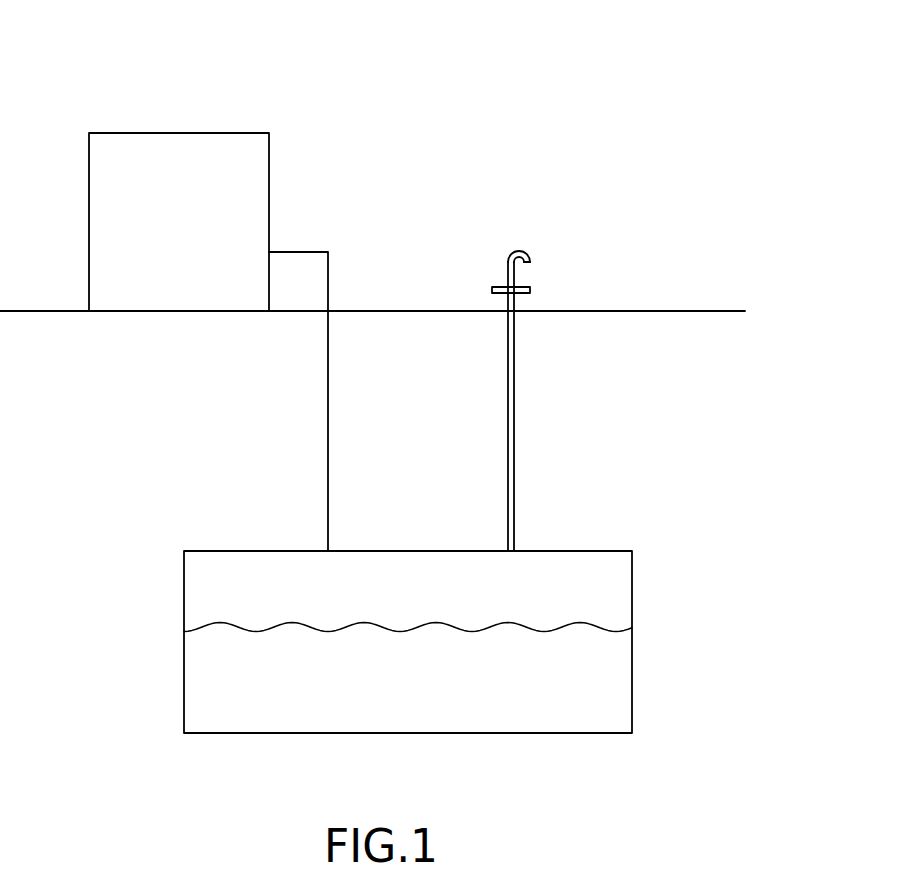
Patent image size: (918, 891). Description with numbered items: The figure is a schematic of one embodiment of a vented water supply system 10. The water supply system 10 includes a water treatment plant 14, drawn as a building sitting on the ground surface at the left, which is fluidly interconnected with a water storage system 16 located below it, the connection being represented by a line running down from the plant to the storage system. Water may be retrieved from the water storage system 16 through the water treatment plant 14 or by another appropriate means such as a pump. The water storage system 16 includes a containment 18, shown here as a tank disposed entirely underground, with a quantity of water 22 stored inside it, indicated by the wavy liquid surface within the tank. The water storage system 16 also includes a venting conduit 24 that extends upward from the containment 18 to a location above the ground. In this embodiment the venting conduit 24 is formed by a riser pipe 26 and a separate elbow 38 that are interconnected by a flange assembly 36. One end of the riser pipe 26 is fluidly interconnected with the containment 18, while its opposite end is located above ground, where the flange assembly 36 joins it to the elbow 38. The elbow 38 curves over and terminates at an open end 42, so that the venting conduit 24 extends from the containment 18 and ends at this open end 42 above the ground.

The water supply system 10 is at (515, 108).
The water treatment plant 14 is at (191, 226).
The water storage system 16 is at (602, 489).
The containment 18 is at (211, 551).
The water 22 is at (421, 684).
The venting conduit 24 is at (491, 404).
The riser pipe 26 is at (516, 412).
The flange assembly 36 is at (547, 292).
The elbow 38 is at (508, 258).
The open end 42 is at (530, 262).